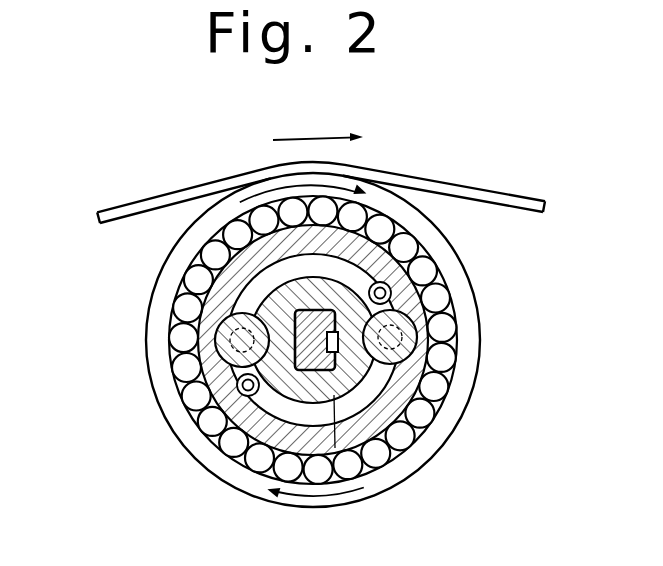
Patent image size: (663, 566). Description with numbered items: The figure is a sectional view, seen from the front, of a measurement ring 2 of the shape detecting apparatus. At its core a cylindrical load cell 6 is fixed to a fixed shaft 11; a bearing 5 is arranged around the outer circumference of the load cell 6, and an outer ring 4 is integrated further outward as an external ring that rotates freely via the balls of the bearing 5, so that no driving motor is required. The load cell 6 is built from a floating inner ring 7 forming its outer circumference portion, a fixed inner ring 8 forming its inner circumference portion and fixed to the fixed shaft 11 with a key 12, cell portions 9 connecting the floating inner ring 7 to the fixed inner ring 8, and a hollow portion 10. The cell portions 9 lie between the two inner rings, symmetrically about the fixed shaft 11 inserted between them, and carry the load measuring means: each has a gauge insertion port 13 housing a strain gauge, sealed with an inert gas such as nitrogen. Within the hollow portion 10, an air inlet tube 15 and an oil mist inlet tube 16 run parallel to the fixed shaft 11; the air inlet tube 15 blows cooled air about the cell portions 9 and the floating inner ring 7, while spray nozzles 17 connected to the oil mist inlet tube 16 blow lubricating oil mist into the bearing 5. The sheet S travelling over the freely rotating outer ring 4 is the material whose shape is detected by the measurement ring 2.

The measurement ring 2 is at (448, 498).
The sheet S is at (477, 188).
The outer ring 4 is at (470, 298).
The bearing 5 is at (430, 265).
The load cell 6 is at (222, 300).
The floating inner ring 7 is at (236, 386).
The fixed inner ring 8 is at (373, 483).
The cell portions 9 is at (216, 341).
The hollow portion 10 is at (422, 390).
The fixed shaft 11 is at (333, 398).
The key 12 is at (338, 342).
The gauge insertion port 13 is at (414, 322).
The air inlet tube 15 is at (382, 255).
The oil mist inlet tube 16 is at (244, 394).
The spray nozzles 17 is at (228, 408).